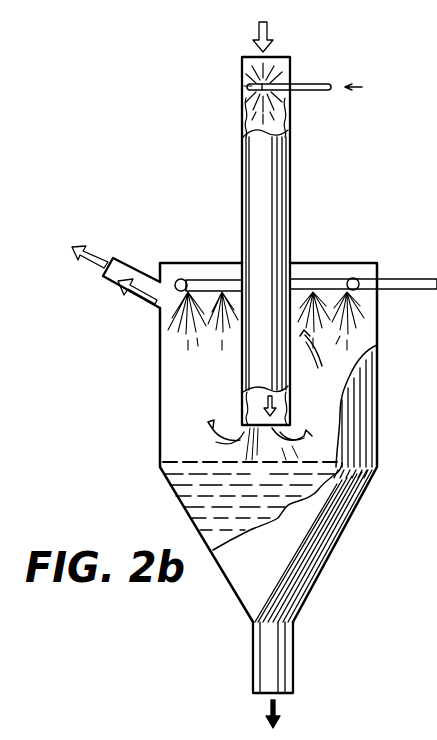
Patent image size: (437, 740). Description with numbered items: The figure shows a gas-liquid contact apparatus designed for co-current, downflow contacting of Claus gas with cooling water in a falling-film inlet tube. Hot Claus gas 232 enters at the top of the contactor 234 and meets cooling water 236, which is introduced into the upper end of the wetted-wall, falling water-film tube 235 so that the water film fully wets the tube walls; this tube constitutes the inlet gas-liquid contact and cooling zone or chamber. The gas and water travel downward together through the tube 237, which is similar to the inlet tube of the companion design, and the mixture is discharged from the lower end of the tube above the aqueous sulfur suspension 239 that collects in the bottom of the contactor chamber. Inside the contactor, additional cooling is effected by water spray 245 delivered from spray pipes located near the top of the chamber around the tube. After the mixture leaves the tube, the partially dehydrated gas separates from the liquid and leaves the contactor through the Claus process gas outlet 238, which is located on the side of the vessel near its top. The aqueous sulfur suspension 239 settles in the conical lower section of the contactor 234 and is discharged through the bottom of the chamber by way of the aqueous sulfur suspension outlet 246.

The Claus gas 232 is at (294, 79).
The contactor 234 is at (380, 327).
The wetted-wall falling water-film tube 235 is at (242, 116).
The cooling water 236 is at (329, 94).
The tube 237 is at (292, 379).
The Claus process gas outlet 238 is at (133, 268).
The aqueous sulfur suspension 239 is at (192, 503).
The water spray 245 is at (360, 279).
The aqueous sulfur suspension outlet 246 is at (297, 661).